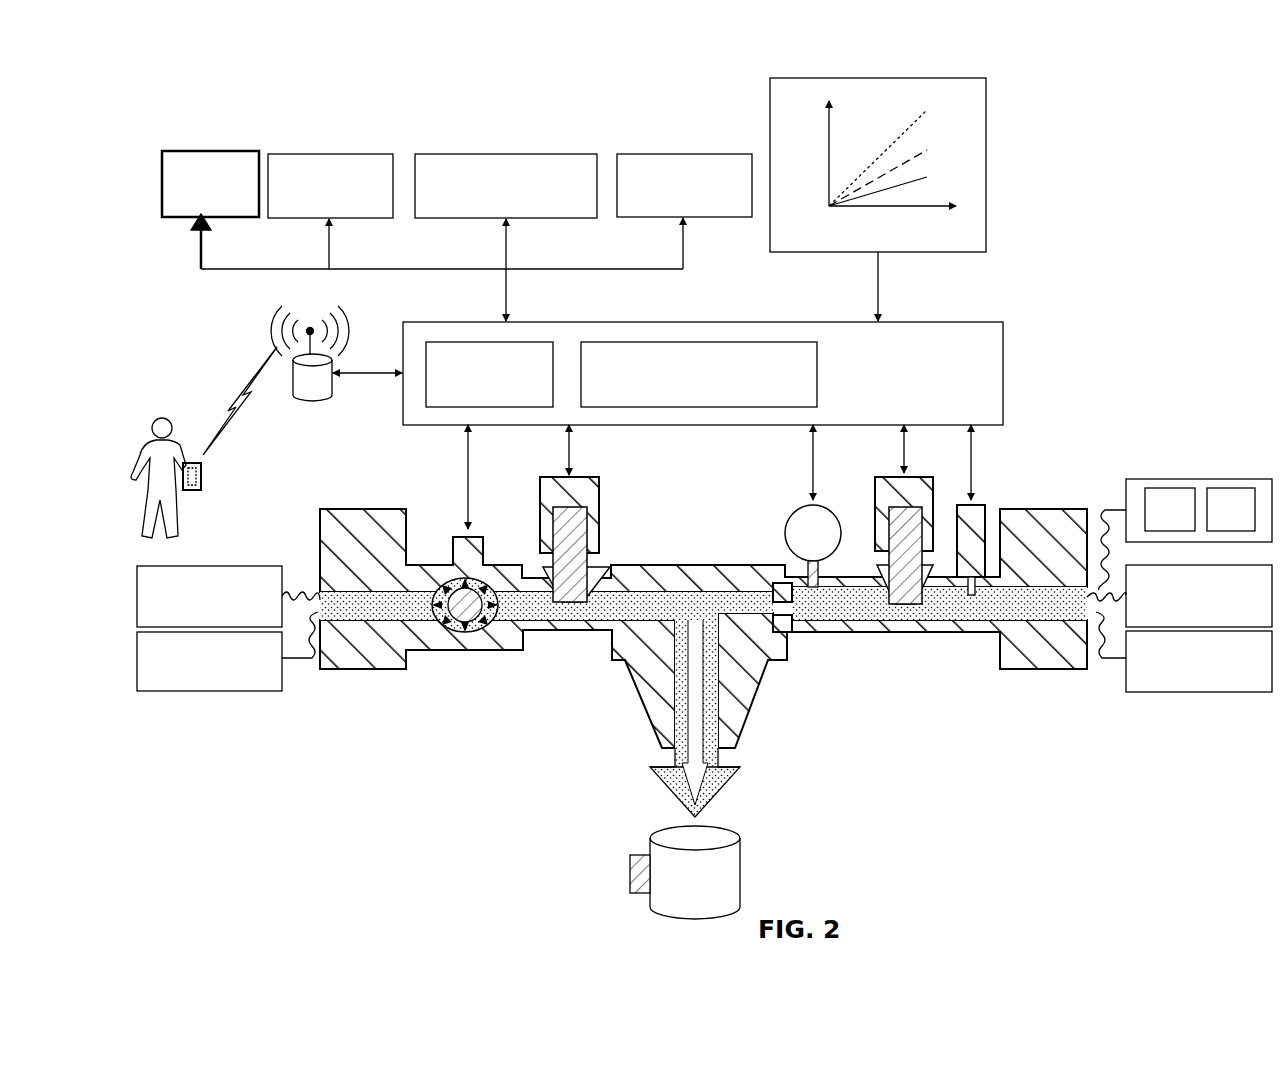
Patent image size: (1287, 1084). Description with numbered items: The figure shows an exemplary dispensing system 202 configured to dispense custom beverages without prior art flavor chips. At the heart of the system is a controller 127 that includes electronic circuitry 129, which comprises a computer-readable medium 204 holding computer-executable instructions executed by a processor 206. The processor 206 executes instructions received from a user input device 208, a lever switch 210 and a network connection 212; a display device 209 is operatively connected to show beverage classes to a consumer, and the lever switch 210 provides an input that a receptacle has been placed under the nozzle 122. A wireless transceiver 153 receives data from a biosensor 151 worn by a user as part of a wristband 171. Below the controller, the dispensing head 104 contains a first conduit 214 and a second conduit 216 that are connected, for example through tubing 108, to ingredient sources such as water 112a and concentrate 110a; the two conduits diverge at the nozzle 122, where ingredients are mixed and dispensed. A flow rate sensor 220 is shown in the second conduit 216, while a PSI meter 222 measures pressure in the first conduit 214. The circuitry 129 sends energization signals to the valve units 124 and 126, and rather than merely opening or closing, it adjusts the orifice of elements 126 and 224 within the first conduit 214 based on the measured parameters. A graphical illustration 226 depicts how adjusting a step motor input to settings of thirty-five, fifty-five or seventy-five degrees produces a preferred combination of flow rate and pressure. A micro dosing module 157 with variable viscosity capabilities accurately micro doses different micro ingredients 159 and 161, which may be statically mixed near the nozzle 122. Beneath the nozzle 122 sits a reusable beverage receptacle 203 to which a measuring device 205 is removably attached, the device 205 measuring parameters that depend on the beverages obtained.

The dispensing head 104 is at (798, 650).
The tubing 108 is at (302, 577).
The concentrate 110a is at (704, 652).
The water 112a is at (704, 596).
The nozzle 122 is at (747, 720).
The valve unit 124 is at (599, 490).
The valve unit 126 is at (922, 477).
The controller 127 is at (741, 373).
The electronic circuitry 129 is at (920, 372).
The biosensor 151 is at (190, 490).
The wireless transceiver 153 is at (320, 397).
The micro dosing module 157 is at (1185, 506).
The micro ingredient 159 is at (1170, 509).
The micro ingredient 161 is at (1231, 509).
The wristband 171 is at (201, 474).
The dispensing system 202 is at (1051, 163).
The beverage receptacle 203 is at (740, 876).
The computer-readable medium 204 is at (695, 342).
The device 205 is at (630, 870).
The processor 206 is at (458, 342).
The user input device 208 is at (357, 154).
The display device 209 is at (210, 150).
The lever switch 210 is at (507, 154).
The network connection 212 is at (708, 154).
The first conduit 214 is at (1005, 603).
The second conduit 216 is at (982, 503).
The flow rate sensor 220 is at (478, 632).
The PSI meter 222 is at (790, 515).
The adjustable orifice 224 is at (793, 628).
The graphical illustration 226 is at (973, 108).